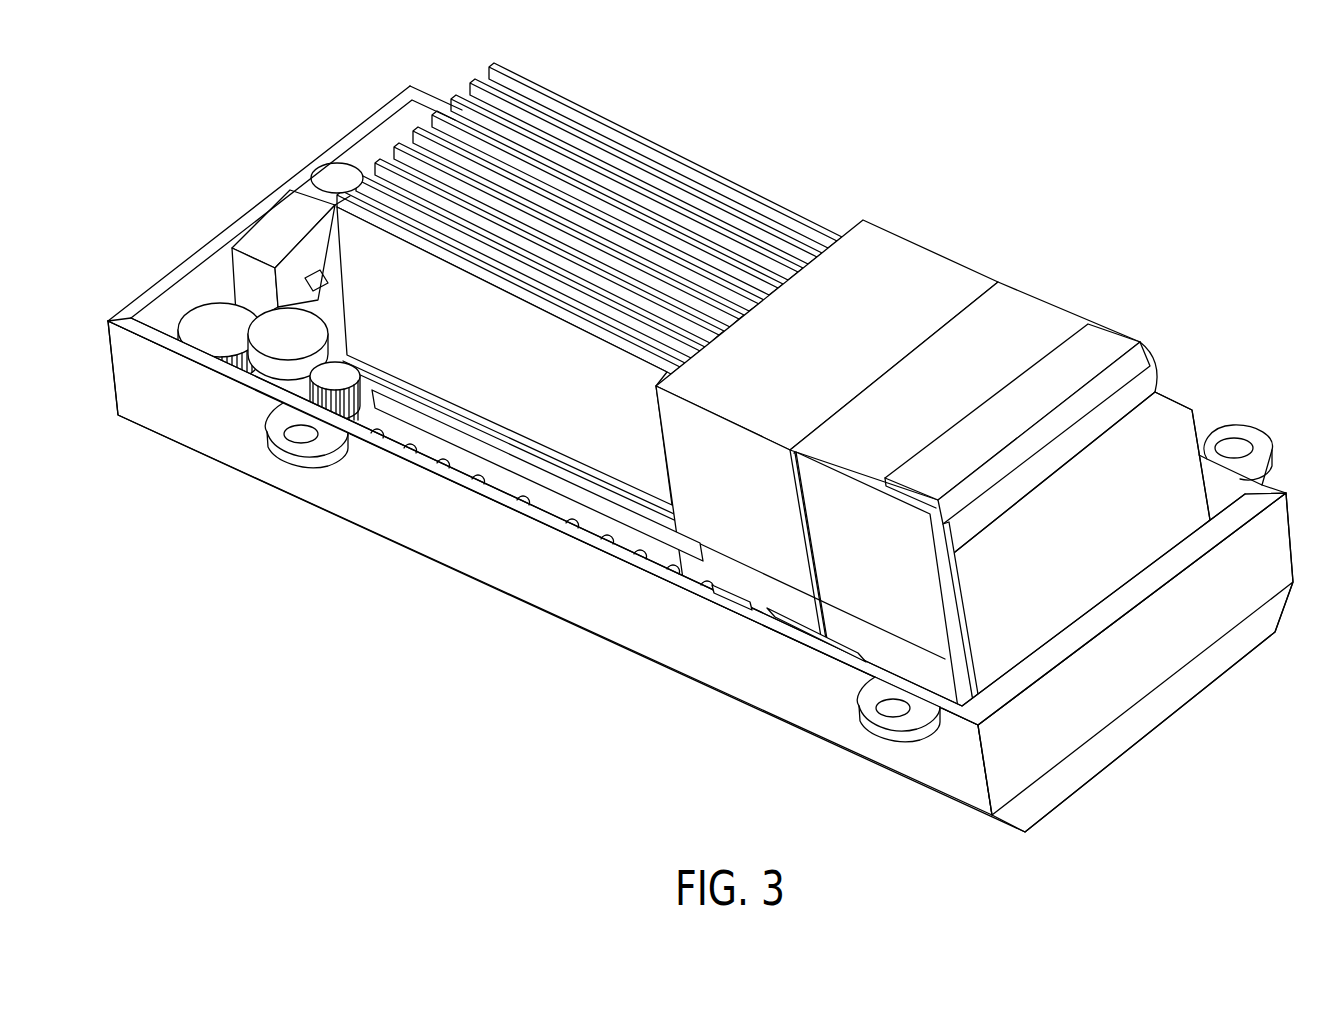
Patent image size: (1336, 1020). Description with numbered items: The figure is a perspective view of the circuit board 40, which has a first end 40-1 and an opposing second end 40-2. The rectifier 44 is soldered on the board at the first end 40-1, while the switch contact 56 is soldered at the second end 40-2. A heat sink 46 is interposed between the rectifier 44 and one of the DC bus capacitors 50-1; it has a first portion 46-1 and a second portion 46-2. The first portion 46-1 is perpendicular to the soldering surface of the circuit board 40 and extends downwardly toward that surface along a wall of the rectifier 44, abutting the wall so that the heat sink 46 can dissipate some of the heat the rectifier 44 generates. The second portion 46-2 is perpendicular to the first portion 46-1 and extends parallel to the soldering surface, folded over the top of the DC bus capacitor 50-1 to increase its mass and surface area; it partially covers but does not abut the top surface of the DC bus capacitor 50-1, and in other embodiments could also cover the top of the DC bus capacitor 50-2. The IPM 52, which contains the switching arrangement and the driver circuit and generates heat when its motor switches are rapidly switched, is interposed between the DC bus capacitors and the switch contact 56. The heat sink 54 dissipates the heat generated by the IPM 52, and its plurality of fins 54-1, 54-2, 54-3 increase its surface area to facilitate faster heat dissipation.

The circuit board 40 is at (398, 432).
The first end 40-1 is at (1256, 700).
The second end 40-2 is at (190, 168).
The rectifier 44 is at (1198, 420).
The heat sink 46 is at (1055, 493).
The first portion 46-1 is at (1146, 380).
The second portion 46-2 is at (1090, 333).
The DC bus capacitor 50-1 is at (1017, 302).
The DC bus capacitor 50-2 is at (913, 261).
The IPM 52 is at (490, 437).
The heat sink 54 is at (589, 279).
The fin 54-1 is at (610, 137).
The fin 54-2 is at (547, 127).
The fin 54-3 is at (452, 108).
The switch contact 56 is at (336, 177).